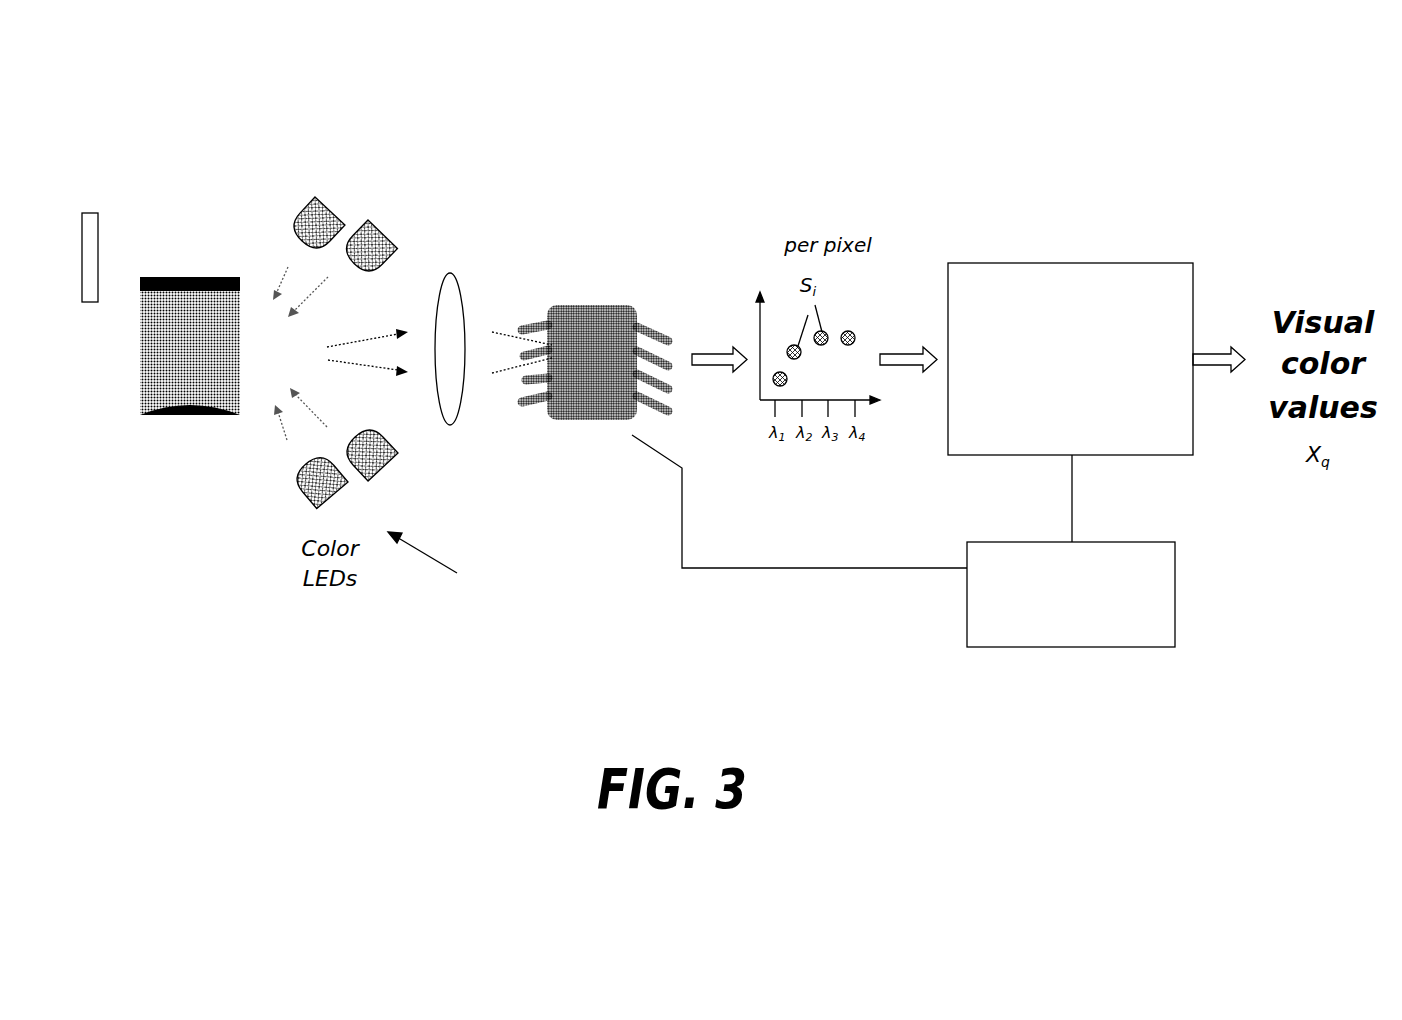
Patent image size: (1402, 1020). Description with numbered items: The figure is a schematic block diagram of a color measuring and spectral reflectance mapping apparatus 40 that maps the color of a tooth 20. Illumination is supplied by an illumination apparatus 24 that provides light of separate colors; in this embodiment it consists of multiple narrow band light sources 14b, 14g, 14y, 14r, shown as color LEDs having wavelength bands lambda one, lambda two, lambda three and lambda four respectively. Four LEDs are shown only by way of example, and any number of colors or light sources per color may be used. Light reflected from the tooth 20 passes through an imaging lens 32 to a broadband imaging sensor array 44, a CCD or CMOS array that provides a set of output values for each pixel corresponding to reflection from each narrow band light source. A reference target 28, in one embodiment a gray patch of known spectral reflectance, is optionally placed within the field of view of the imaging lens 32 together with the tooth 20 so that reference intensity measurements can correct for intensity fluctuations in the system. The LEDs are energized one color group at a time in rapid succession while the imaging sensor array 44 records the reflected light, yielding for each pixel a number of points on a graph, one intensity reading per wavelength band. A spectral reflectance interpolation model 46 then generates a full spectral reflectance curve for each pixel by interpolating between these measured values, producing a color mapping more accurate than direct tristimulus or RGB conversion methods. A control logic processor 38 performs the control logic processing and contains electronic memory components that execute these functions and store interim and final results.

The color measuring and spectral reflectance mapping apparatus 40 is at (440, 92).
The reference target 28 is at (82, 215).
The tooth 20 is at (172, 275).
The narrow band light source 14r is at (313, 208).
The narrow band light source 14y is at (372, 267).
The narrow band light source 14b is at (293, 480).
The narrow band light source 14g is at (397, 453).
The illumination apparatus 24 is at (443, 566).
The imaging lens 32 is at (453, 278).
The broadband imaging sensor array 44 is at (592, 420).
The spectral reflectance interpolation model 46 is at (1070, 262).
The control logic processor 38 is at (1175, 585).